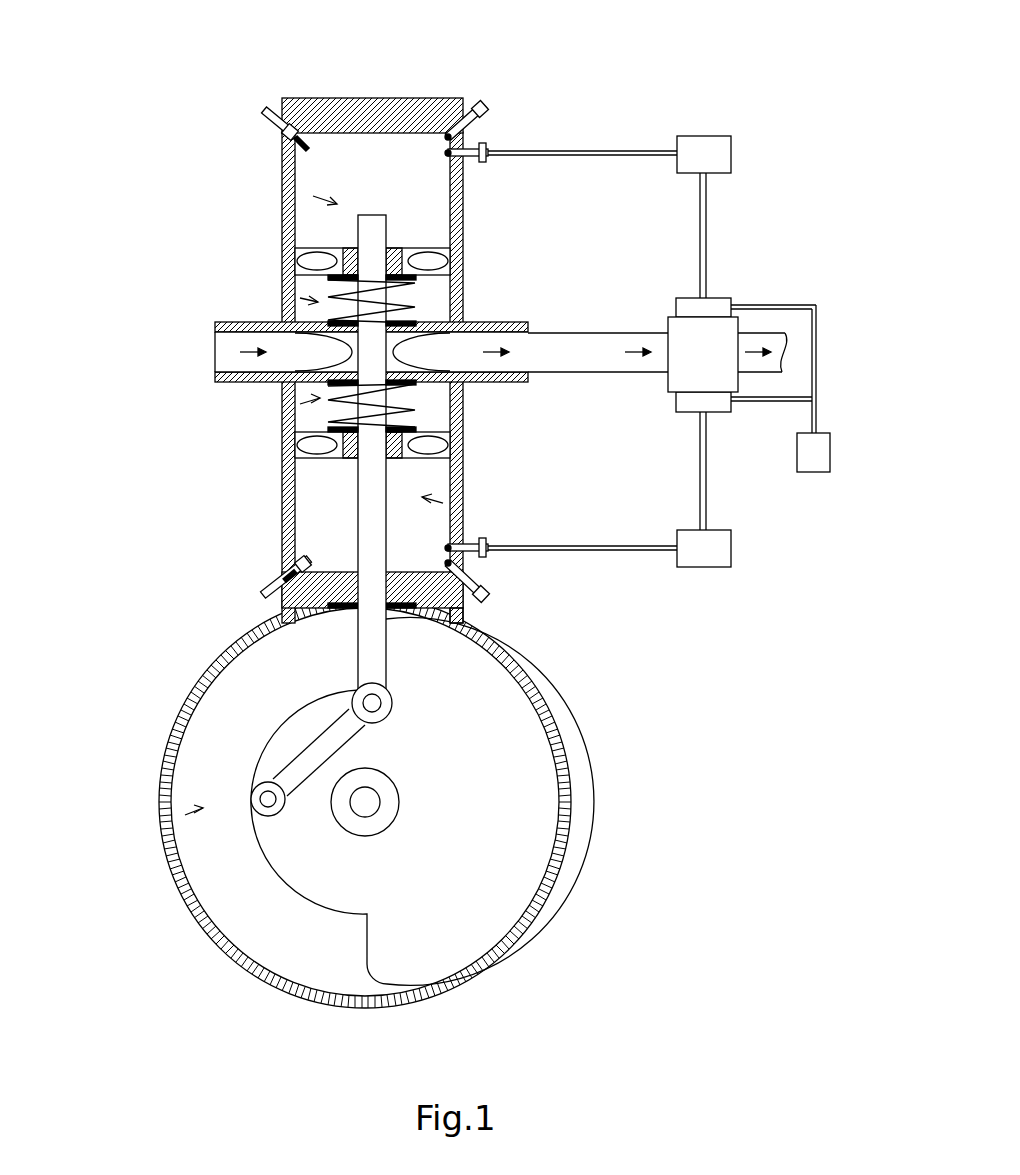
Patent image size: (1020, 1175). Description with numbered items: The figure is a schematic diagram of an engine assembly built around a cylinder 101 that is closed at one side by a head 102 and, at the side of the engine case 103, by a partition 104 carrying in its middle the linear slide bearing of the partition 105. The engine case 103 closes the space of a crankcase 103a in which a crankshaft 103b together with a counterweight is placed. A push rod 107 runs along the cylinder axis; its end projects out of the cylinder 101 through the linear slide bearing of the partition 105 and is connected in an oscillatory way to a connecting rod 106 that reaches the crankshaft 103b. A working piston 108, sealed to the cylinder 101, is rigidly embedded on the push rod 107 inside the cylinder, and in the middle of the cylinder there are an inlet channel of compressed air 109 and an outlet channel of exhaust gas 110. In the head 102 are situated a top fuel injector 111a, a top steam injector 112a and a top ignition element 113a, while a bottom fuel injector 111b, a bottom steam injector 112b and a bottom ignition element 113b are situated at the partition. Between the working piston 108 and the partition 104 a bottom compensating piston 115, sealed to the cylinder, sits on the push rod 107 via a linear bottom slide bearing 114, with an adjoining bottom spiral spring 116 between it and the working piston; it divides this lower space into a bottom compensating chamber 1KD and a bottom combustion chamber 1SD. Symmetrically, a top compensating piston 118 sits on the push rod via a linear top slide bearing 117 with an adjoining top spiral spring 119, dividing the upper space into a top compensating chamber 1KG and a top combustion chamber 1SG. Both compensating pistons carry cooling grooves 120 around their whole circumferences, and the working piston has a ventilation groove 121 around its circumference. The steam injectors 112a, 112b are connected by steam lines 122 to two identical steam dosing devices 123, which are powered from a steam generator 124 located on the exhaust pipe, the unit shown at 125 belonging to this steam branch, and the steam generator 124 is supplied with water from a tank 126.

The cylinder 101 is at (463, 307).
The head 102 is at (430, 117).
The engine case 103 is at (165, 790).
The crankcase 103a is at (185, 815).
The crankshaft 103b is at (465, 767).
The partition 104 is at (463, 610).
The linear slide bearing of the partition 105 is at (282, 603).
The connecting rod 106 is at (283, 777).
The push rod 107 is at (372, 487).
The working piston 108 is at (335, 312).
The inlet channel of compressed air 109 is at (225, 343).
The outlet channel of exhaust gas 110 is at (507, 353).
The top fuel injector 111a is at (487, 108).
The bottom fuel injector 111b is at (488, 593).
The top steam injector 112a is at (490, 152).
The bottom steam injector 112b is at (487, 550).
The top ignition element 113a is at (285, 133).
The bottom ignition element 113b is at (292, 572).
The linear bottom slide bearing 114 is at (347, 460).
The bottom compensating piston 115 is at (330, 438).
The bottom spiral spring 116 is at (405, 392).
The linear top slide bearing 117 is at (402, 248).
The top compensating piston 118 is at (298, 250).
The top spiral spring 119 is at (402, 307).
The cooling grooves 120 is at (443, 260).
The ventilation groove 121 is at (430, 355).
The steam lines 122 is at (645, 153).
The steam dosing devices 123 is at (722, 158).
The steam generator 124 is at (768, 340).
The control unit 125 is at (717, 340).
The tank 126 is at (817, 465).
The top combustion chamber 1SG is at (313, 196).
The top compensating chamber 1KG is at (300, 298).
The bottom compensating chamber 1KD is at (300, 404).
The bottom combustion chamber 1SD is at (443, 503).